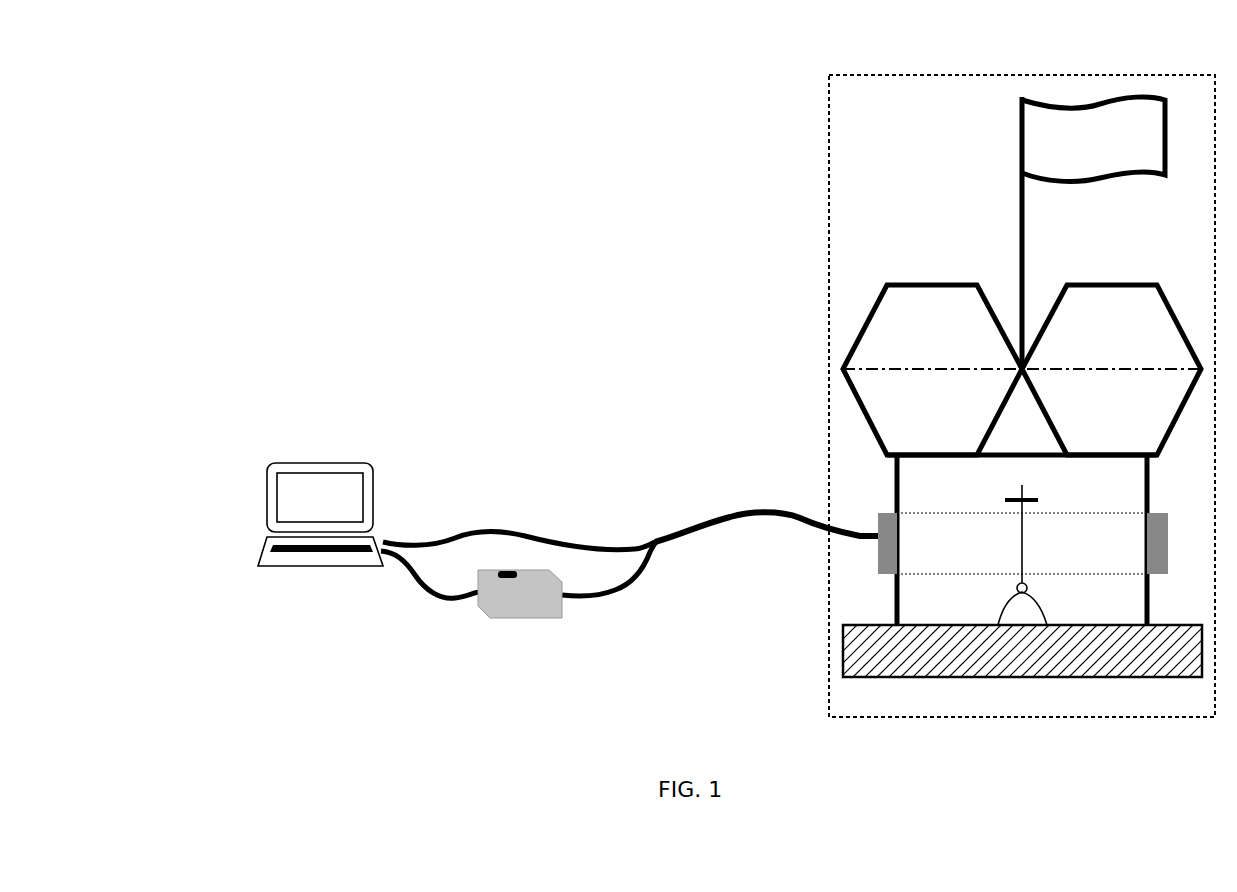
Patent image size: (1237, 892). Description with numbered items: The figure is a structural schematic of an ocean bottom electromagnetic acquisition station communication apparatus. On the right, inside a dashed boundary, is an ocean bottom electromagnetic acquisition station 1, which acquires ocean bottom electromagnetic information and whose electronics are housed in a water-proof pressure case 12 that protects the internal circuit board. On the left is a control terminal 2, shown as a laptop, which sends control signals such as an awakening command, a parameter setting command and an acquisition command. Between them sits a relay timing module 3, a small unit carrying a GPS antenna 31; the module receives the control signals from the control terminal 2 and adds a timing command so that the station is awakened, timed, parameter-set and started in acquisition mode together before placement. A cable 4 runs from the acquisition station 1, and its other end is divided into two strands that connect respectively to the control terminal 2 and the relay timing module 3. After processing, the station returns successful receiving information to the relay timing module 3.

The ocean bottom electromagnetic acquisition station 1 is at (986, 396).
The water-proof pressure case 12 is at (955, 493).
The control terminal 2 is at (285, 502).
The relay timing module 3 is at (546, 597).
The GPS antenna 31 is at (561, 641).
The cable 4 is at (766, 576).